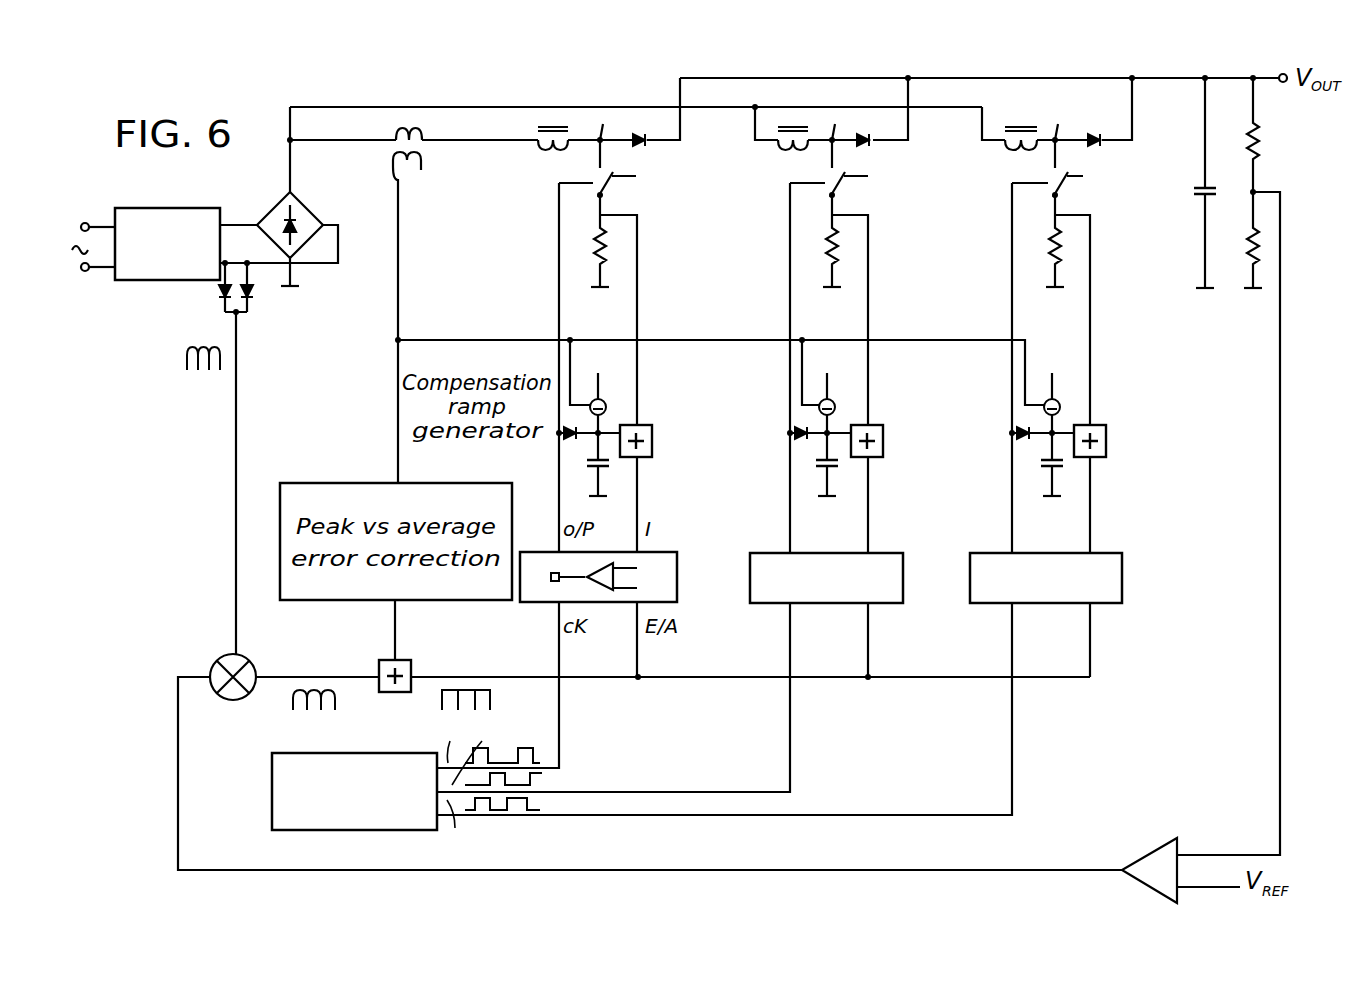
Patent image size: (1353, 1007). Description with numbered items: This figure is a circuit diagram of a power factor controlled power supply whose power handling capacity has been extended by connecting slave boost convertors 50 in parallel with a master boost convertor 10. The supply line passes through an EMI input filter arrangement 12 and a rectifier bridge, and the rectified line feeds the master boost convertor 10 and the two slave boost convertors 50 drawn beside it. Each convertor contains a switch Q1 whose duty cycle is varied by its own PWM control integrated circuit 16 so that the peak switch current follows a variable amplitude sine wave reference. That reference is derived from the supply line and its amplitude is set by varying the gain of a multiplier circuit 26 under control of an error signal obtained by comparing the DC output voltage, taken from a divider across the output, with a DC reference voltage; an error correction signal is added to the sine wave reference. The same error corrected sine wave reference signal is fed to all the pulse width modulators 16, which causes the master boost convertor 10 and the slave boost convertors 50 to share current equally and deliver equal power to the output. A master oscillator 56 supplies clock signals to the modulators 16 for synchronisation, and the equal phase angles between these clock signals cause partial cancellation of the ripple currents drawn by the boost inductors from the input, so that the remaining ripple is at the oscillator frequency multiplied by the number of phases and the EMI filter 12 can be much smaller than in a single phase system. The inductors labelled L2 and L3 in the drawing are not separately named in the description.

The EMI input filter arrangement 12 is at (178, 262).
The current sense transformer winding L2 is at (405, 130).
The boost inductor L3 is at (548, 130).
The master boost convertor 10 is at (604, 122).
The slave boost convertor 50 is at (836, 122).
The switch Q1 is at (857, 184).
The PWM control integrated circuit 16 is at (676, 553).
The multiplier circuit 26 is at (255, 661).
The master oscillator 56 is at (370, 807).